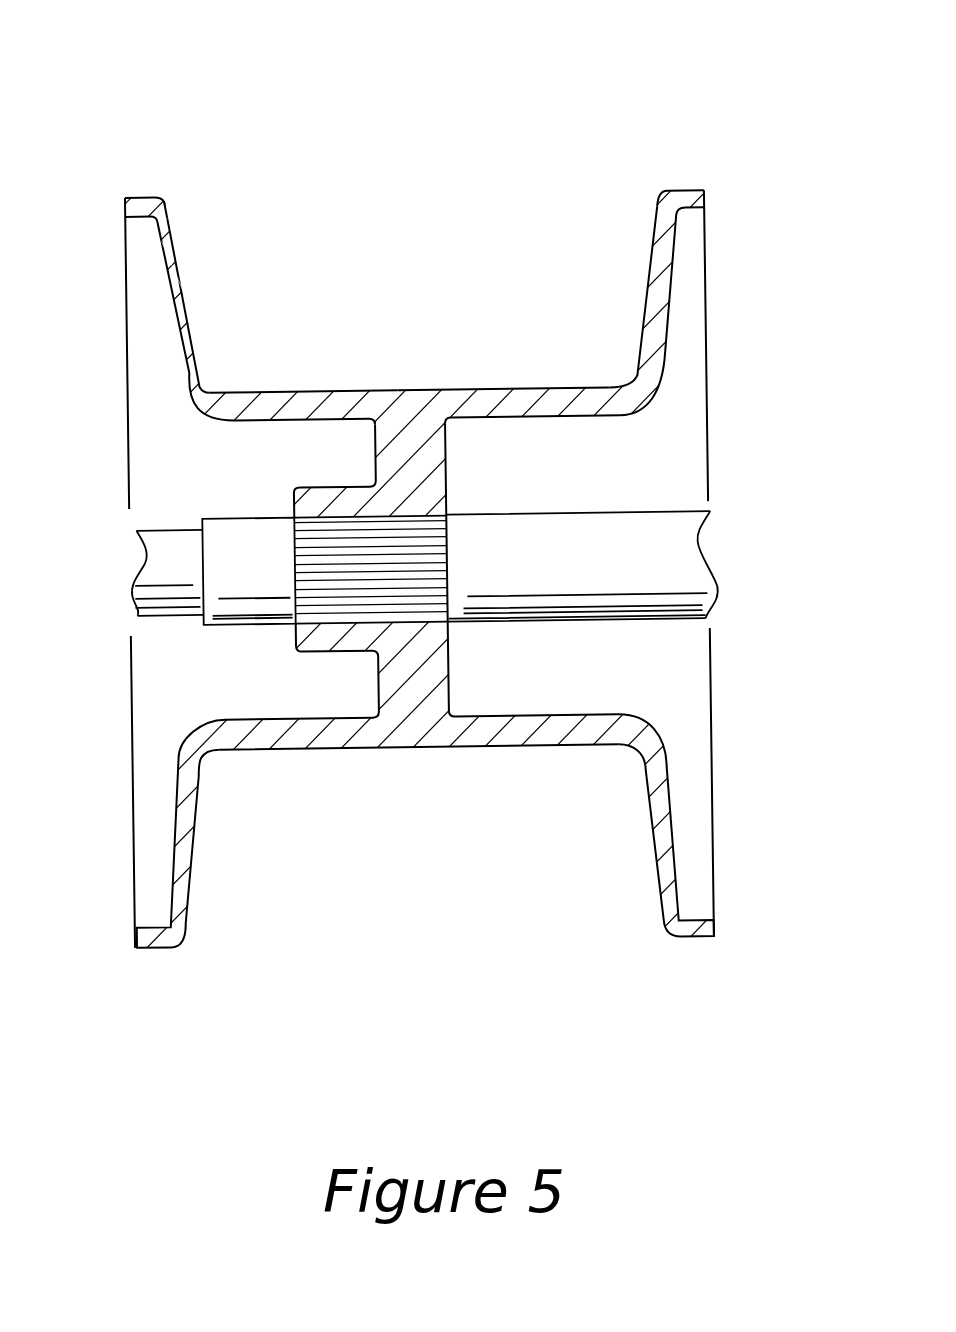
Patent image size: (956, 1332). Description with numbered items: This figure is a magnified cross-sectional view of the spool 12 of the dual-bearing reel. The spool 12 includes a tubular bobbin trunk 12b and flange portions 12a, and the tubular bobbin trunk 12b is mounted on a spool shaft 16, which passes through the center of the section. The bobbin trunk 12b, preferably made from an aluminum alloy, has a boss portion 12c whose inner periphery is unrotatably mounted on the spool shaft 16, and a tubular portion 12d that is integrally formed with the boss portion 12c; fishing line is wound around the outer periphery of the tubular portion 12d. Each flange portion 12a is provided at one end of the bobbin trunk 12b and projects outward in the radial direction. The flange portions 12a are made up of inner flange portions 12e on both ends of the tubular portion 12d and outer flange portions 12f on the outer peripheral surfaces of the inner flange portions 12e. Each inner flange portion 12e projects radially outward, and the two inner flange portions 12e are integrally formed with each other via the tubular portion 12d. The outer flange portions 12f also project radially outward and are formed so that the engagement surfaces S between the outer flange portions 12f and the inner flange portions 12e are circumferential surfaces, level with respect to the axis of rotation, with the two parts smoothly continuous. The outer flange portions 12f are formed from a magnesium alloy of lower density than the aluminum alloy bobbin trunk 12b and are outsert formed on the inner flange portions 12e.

The spool 12 is at (428, 146).
The flange portion 12a is at (178, 198).
The tubular bobbin trunk 12b is at (400, 385).
The boss portion 12c is at (422, 466).
The tubular portion 12d is at (347, 390).
The inner flange portion 12e is at (183, 313).
The outer flange portion 12f is at (170, 245).
The engagement surface S is at (178, 290).
The spool shaft 16 is at (555, 553).